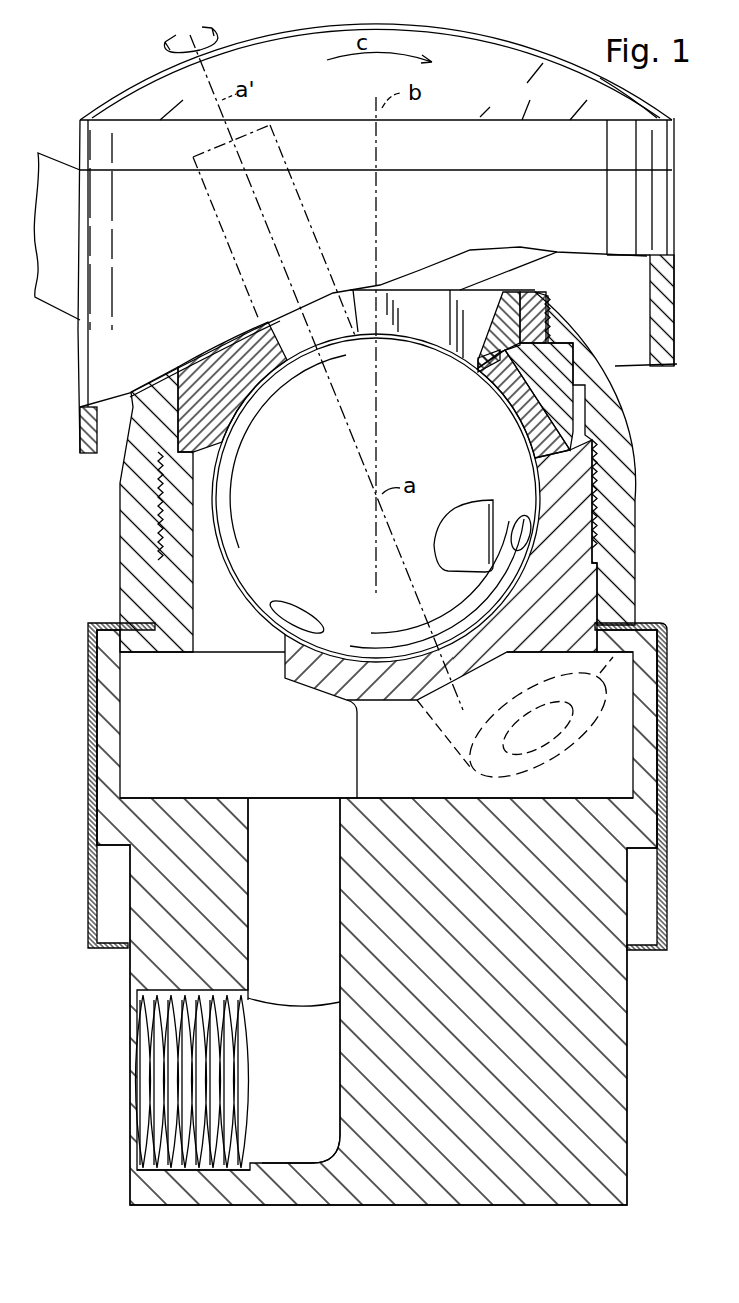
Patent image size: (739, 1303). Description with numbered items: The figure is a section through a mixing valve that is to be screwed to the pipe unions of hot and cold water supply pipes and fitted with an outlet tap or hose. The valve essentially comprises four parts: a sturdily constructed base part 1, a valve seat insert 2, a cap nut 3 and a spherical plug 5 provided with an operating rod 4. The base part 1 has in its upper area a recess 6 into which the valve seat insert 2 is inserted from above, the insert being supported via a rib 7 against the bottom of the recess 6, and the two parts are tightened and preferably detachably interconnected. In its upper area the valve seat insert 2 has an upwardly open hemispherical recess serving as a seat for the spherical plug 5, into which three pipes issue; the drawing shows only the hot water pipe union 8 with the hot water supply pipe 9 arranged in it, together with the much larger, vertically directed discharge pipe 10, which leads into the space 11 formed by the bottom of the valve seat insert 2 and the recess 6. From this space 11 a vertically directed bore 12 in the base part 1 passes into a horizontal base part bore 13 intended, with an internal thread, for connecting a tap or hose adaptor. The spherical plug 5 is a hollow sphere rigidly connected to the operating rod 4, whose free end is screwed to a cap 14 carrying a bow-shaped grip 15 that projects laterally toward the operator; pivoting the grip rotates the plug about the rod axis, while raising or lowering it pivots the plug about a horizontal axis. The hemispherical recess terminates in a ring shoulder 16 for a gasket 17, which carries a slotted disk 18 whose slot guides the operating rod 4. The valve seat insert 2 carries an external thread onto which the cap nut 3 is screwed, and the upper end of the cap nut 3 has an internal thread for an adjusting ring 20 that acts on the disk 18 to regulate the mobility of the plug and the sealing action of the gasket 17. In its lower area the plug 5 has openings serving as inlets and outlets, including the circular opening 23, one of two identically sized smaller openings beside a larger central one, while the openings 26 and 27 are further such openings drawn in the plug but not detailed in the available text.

The base part 1 is at (553, 1055).
The valve seat insert 2 is at (543, 595).
The cap nut 3 is at (613, 505).
The operating rod 4 is at (327, 313).
The spherical plug 5 is at (339, 531).
The recess 6 is at (130, 740).
The rib 7 is at (378, 755).
The hot water pipe union 8 is at (593, 717).
The hot water supply pipe 9 is at (557, 743).
The discharge pipe 10 is at (195, 615).
The space 11 is at (163, 718).
The vertically directed bore 12 is at (250, 860).
The horizontal base part bore 13 is at (168, 1118).
The cap 14 is at (643, 157).
The bow-shaped grip 15 is at (60, 293).
The ring shoulder 16 is at (220, 467).
The gasket 17 is at (523, 402).
The slotted disk 18 is at (480, 375).
The adjusting ring 20 is at (533, 295).
The circular opening 23 is at (280, 632).
The opening 26 is at (535, 530).
The opening 27 is at (463, 528).